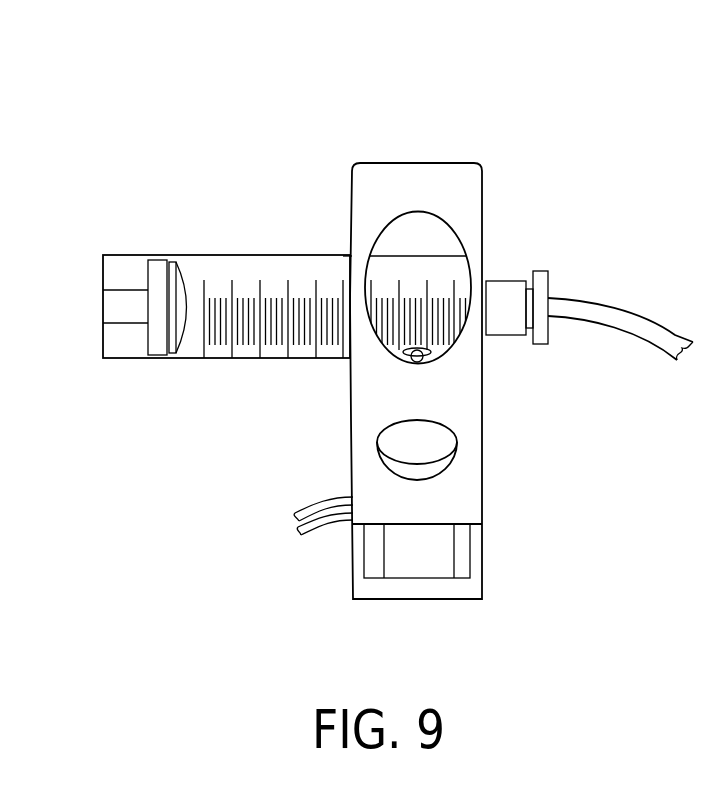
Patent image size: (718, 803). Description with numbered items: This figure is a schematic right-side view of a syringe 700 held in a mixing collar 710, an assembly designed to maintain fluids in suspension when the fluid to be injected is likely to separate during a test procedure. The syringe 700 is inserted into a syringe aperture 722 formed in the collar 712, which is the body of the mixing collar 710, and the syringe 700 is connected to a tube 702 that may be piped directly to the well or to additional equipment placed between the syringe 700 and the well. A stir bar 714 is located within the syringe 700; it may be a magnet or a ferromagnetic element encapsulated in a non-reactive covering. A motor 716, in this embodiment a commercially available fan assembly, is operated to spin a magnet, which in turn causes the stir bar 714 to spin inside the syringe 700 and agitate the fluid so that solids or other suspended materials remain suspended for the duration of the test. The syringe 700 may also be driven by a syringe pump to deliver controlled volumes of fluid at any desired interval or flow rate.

The syringe 700 is at (225, 255).
The tube 702 is at (602, 303).
The mixing collar 710 is at (466, 329).
The collar 712 is at (483, 213).
The stir bar 714 is at (420, 365).
The motor 716 is at (483, 555).
The syringe aperture 722 is at (347, 255).